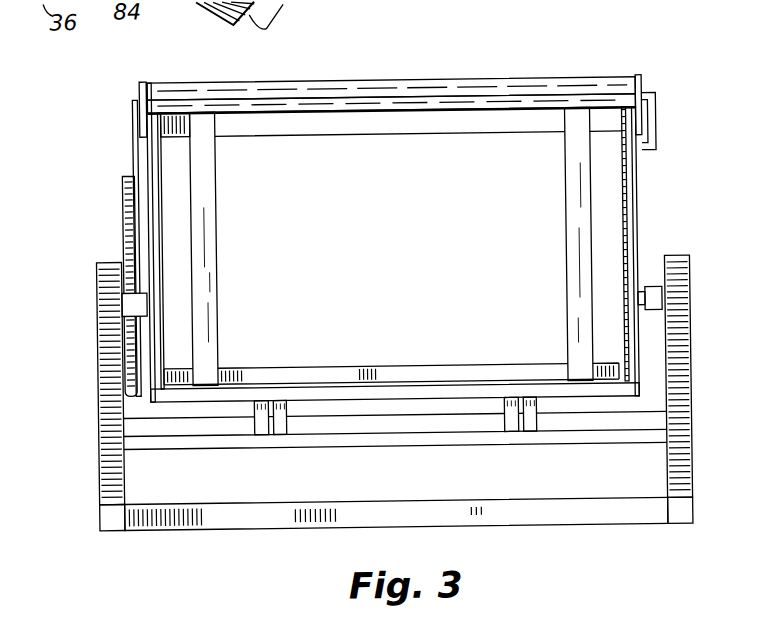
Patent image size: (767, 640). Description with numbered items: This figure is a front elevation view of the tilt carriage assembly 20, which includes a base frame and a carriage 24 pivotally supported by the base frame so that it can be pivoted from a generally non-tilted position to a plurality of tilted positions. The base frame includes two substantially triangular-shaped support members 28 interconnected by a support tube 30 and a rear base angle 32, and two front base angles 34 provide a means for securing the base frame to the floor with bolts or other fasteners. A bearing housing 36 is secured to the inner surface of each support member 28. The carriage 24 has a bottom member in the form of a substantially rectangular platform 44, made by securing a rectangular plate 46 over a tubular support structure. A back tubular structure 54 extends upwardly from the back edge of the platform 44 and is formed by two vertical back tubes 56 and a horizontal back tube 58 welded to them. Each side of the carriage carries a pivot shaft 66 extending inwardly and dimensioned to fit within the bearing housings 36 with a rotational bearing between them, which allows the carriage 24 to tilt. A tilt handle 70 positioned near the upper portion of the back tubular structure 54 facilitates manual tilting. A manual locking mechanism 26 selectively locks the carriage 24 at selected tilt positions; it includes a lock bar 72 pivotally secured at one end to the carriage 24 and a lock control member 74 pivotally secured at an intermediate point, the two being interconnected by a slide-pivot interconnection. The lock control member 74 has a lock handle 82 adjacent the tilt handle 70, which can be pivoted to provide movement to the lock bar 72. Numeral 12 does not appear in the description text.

The support stand 12 is at (100, 311).
The tilt carriage assembly 20 is at (649, 55).
The carriage 24 is at (641, 181).
The manual locking mechanism 26 is at (101, 236).
The support member 28 is at (98, 435).
The support tube 30 is at (202, 440).
The rear base angle 32 is at (313, 506).
The front base angle 34 is at (96, 526).
The bearing housing 36 is at (143, 302).
The platform 44 is at (409, 398).
The rectangular plate 46 is at (468, 367).
The back tubular structure 54 is at (230, 182).
The vertical back tube 56 is at (209, 221).
The horizontal back tube 58 is at (451, 125).
The pivot shaft 66 is at (643, 303).
The tilt handle 70 is at (452, 86).
The lock bar 72 is at (129, 244).
The lock control member 74 is at (137, 142).
The lock handle 82 is at (231, 98).